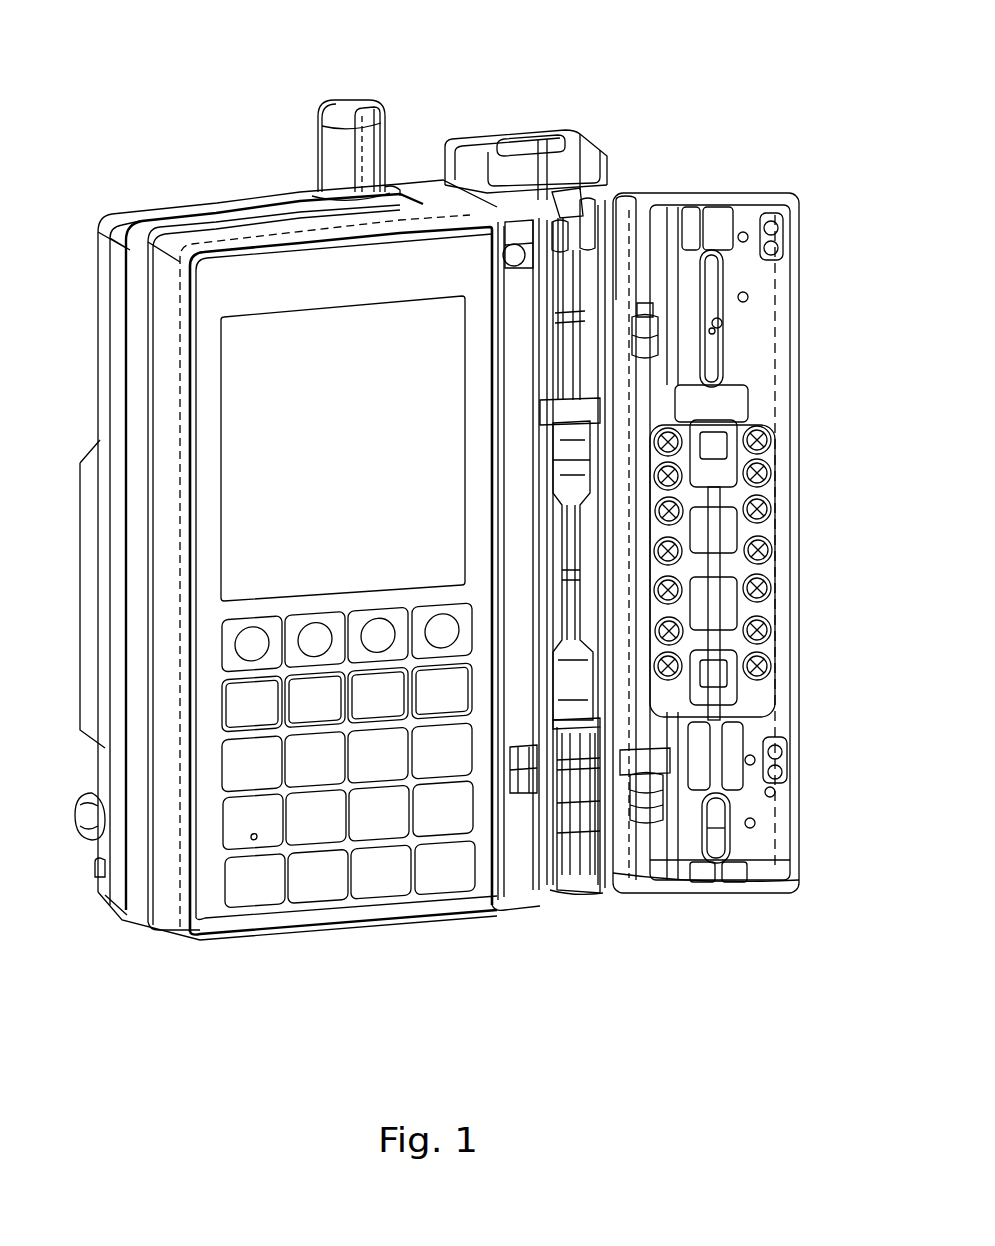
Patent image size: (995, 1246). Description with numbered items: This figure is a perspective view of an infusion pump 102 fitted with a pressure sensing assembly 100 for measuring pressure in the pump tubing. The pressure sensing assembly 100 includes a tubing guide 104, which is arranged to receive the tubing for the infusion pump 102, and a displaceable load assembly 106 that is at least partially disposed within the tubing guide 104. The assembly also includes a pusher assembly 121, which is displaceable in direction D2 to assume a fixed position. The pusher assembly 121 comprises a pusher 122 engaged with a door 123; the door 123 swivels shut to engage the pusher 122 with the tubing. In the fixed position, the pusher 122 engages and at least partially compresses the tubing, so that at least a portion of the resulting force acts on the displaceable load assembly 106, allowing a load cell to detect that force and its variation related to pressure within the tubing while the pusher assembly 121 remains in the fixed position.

The pressure sensing assembly 100 is at (707, 940).
The infusion pump 102 is at (655, 98).
The tubing guide 104 is at (608, 870).
The displaceable load assembly 106 is at (572, 820).
The pusher assembly 121 is at (796, 878).
The pusher 122 is at (756, 862).
The door 123 is at (772, 188).